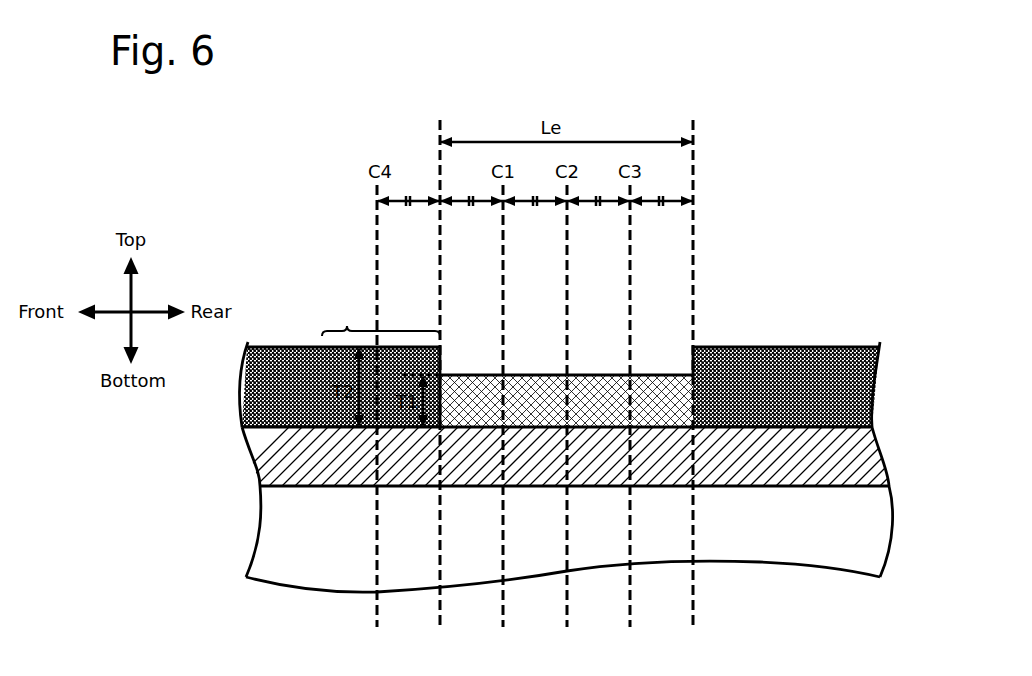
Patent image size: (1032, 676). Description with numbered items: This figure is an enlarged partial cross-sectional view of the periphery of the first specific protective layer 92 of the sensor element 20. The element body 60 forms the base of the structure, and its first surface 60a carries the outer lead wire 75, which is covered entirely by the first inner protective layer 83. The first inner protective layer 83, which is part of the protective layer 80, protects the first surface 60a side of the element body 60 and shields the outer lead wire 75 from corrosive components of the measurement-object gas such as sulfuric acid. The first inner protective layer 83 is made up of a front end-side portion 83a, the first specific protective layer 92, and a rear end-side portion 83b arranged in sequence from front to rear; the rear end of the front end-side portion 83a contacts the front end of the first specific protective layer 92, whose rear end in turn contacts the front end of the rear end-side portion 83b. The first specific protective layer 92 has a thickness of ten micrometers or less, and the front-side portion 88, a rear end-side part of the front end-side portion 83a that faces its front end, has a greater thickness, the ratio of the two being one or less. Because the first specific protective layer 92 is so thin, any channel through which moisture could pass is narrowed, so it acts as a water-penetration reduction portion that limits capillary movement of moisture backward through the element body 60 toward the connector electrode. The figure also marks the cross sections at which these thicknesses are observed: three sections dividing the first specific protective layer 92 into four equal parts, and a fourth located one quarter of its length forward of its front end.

The sensor element 20 is at (841, 213).
The element body 60 is at (268, 528).
The first surface 60a is at (863, 483).
The outer lead wire 75 is at (268, 452).
The protective layer 80 is at (219, 211).
The first inner protective layer 83 is at (287, 276).
The front end-side portion 83a is at (305, 360).
The rear end-side portion 83b is at (797, 357).
The front-side portion 88 is at (381, 318).
The first specific protective layer 92 is at (476, 378).